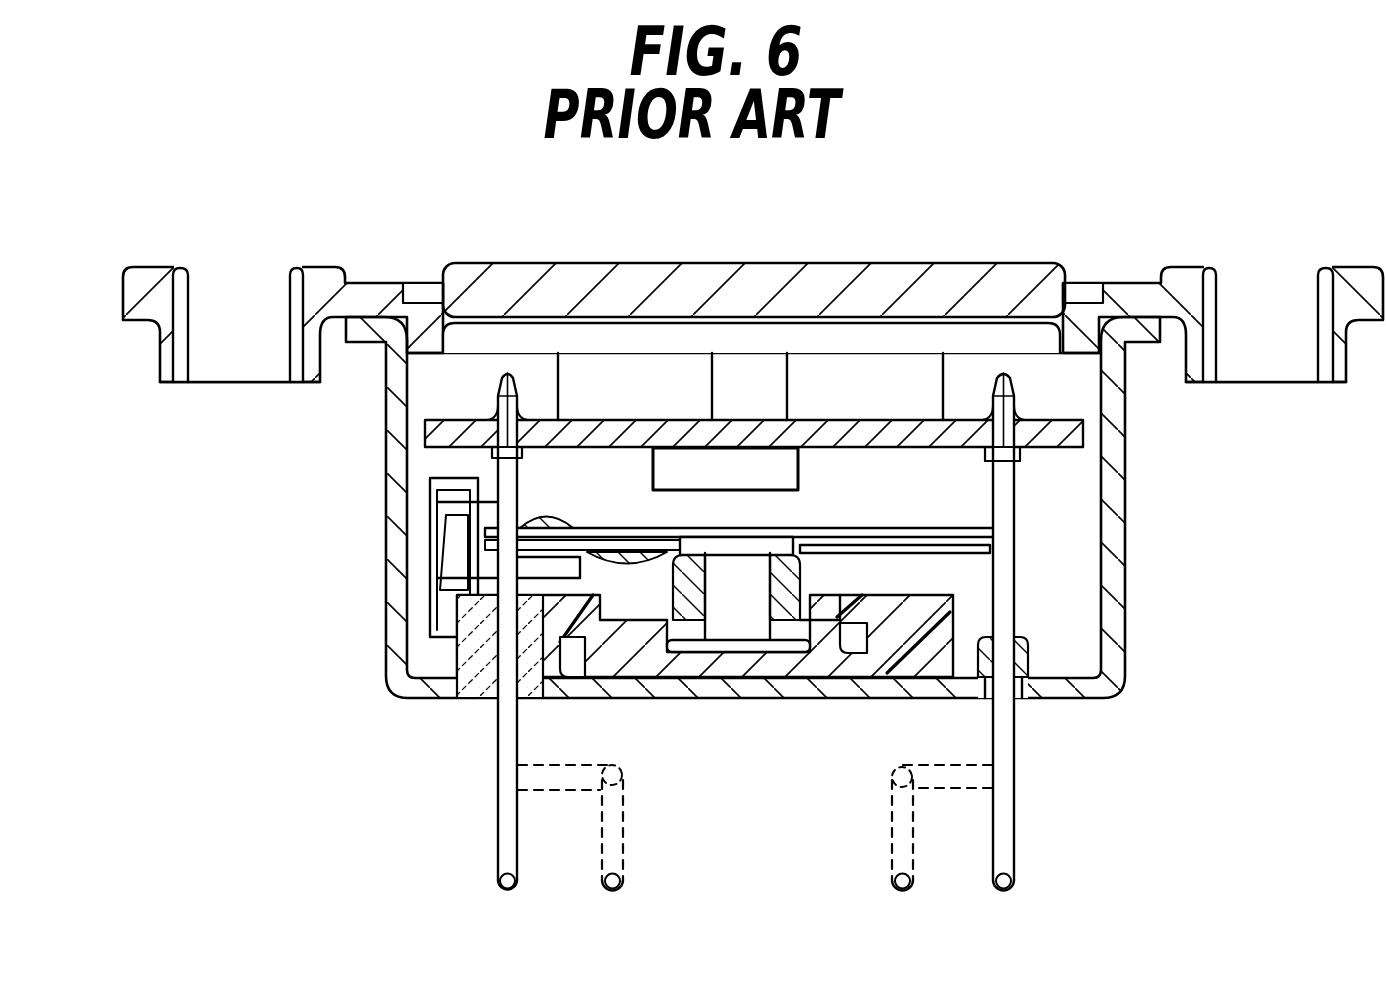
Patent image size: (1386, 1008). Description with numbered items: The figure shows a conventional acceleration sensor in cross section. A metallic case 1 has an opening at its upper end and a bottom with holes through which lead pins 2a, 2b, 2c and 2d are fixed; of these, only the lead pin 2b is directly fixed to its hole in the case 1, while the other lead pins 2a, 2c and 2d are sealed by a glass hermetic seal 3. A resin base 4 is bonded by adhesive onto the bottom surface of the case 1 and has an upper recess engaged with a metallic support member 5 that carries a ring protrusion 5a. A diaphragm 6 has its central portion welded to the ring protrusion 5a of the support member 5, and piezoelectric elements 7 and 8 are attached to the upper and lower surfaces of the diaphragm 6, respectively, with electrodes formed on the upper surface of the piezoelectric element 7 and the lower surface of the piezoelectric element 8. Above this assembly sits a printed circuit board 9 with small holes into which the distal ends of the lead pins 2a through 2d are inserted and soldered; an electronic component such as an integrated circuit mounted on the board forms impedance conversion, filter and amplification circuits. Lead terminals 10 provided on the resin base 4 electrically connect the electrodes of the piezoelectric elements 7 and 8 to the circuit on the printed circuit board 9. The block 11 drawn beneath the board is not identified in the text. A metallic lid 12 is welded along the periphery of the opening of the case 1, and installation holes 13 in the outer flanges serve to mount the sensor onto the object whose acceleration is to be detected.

The metallic case 1 is at (1117, 467).
The lead pin 2a is at (498, 757).
The lead pin 2b is at (998, 808).
The lead pin 2c is at (603, 827).
The lead pin 2d is at (890, 815).
The glass hermetic seal 3 is at (480, 640).
The resin base 4 is at (918, 660).
The metallic support member 5 is at (840, 656).
The ring protrusion 5a is at (690, 698).
The diaphragm 6 is at (997, 538).
The piezoelectric element 7 is at (887, 528).
The piezoelectric element 8 is at (950, 553).
The printed circuit board 9 is at (425, 428).
The lead terminals 10 is at (430, 535).
The heater block 11 is at (653, 470).
The metallic lid 12 is at (976, 281).
The installation hole 13 is at (249, 288).